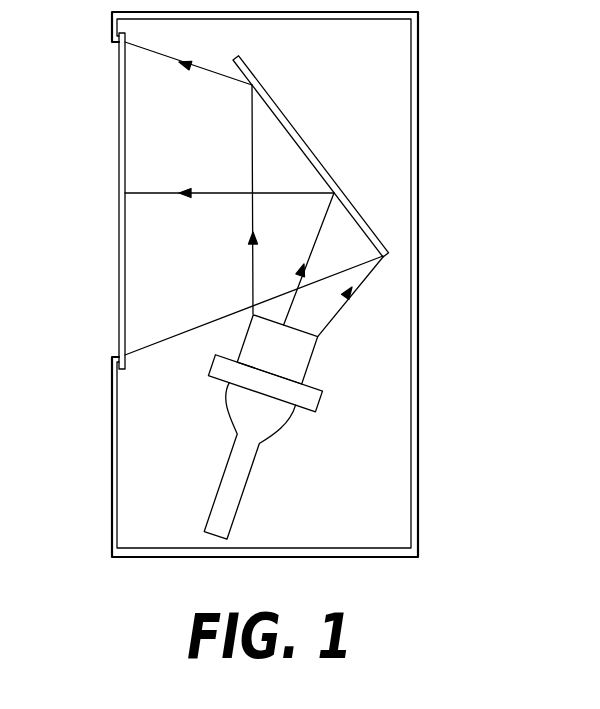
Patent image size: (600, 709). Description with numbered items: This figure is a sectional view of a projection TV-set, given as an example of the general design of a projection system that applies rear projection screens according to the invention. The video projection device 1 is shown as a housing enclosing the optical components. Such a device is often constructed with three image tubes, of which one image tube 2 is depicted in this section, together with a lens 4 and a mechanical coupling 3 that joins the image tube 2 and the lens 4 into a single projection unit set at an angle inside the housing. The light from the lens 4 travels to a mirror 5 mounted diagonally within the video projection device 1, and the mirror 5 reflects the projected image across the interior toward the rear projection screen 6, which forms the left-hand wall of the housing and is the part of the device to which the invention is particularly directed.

The video projection device 1 is at (418, 128).
The image tube 2 is at (263, 420).
The mechanical coupling 3 is at (310, 400).
The lens 4 is at (292, 359).
The mirror 5 is at (322, 165).
The rear projection screen 6 is at (119, 147).